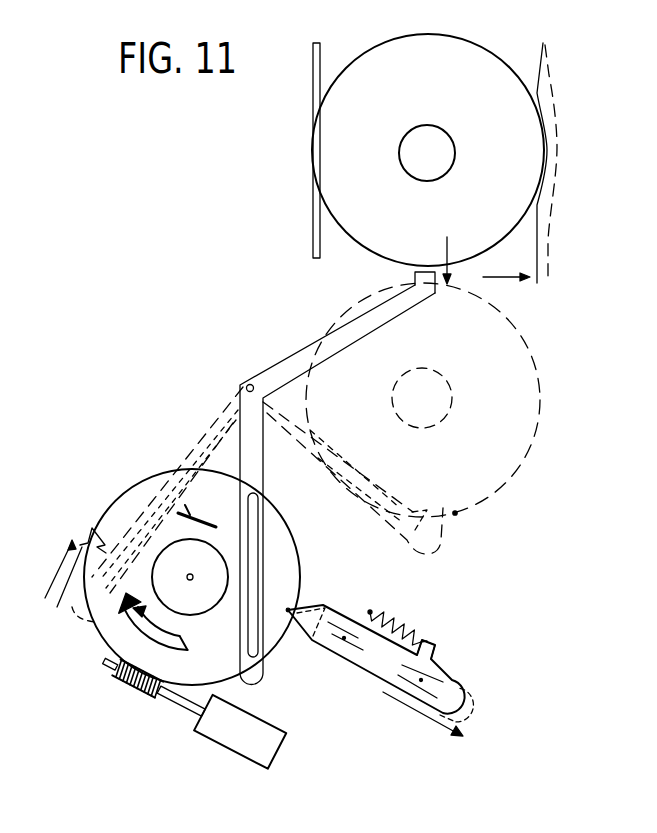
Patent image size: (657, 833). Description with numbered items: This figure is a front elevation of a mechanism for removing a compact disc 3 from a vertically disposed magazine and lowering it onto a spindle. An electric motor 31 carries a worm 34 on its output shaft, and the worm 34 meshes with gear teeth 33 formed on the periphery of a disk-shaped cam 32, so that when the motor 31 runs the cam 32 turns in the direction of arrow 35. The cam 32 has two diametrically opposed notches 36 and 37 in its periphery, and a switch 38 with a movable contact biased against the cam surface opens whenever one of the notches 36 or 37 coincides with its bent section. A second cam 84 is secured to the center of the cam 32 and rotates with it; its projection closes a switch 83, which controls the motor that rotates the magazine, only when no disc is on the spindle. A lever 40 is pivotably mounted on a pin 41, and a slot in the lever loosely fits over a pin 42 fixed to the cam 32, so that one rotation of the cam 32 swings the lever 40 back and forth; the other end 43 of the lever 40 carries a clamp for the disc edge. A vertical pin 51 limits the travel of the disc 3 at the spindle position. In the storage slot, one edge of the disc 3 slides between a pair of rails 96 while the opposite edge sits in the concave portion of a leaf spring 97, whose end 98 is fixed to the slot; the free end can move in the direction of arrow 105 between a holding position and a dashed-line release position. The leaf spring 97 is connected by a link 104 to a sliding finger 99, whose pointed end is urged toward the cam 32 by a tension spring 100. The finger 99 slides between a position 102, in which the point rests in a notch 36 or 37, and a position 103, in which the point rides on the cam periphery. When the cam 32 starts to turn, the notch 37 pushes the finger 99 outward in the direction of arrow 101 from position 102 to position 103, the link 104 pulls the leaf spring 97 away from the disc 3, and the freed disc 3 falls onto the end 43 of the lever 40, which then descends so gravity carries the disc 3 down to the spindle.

The compact disc 3 is at (340, 130).
The electric motor 31 is at (270, 745).
The cam 32 is at (110, 630).
The gear teeth 33 is at (104, 664).
The worm 34 is at (143, 690).
The arrow 35 is at (185, 642).
The notch 36 is at (112, 527).
The notch 37 is at (293, 606).
The switch 38 is at (55, 580).
The lever 40 is at (264, 373).
The pin 41 is at (247, 383).
The pin 42 is at (262, 522).
The end of the lever 43 is at (415, 283).
The vertical pin 51 is at (455, 513).
The switch 83 is at (223, 543).
The second cam 84 is at (202, 613).
The rails 96 is at (320, 60).
The leaf spring 97 is at (543, 78).
The end of the leaf spring 98 is at (543, 47).
The sliding finger 99 is at (372, 667).
The tension spring 100 is at (403, 623).
The arrow 101 is at (423, 720).
The position 102 is at (450, 680).
The position 103 is at (472, 705).
The link 104 is at (601, 275).
The arrow 105 is at (510, 282).